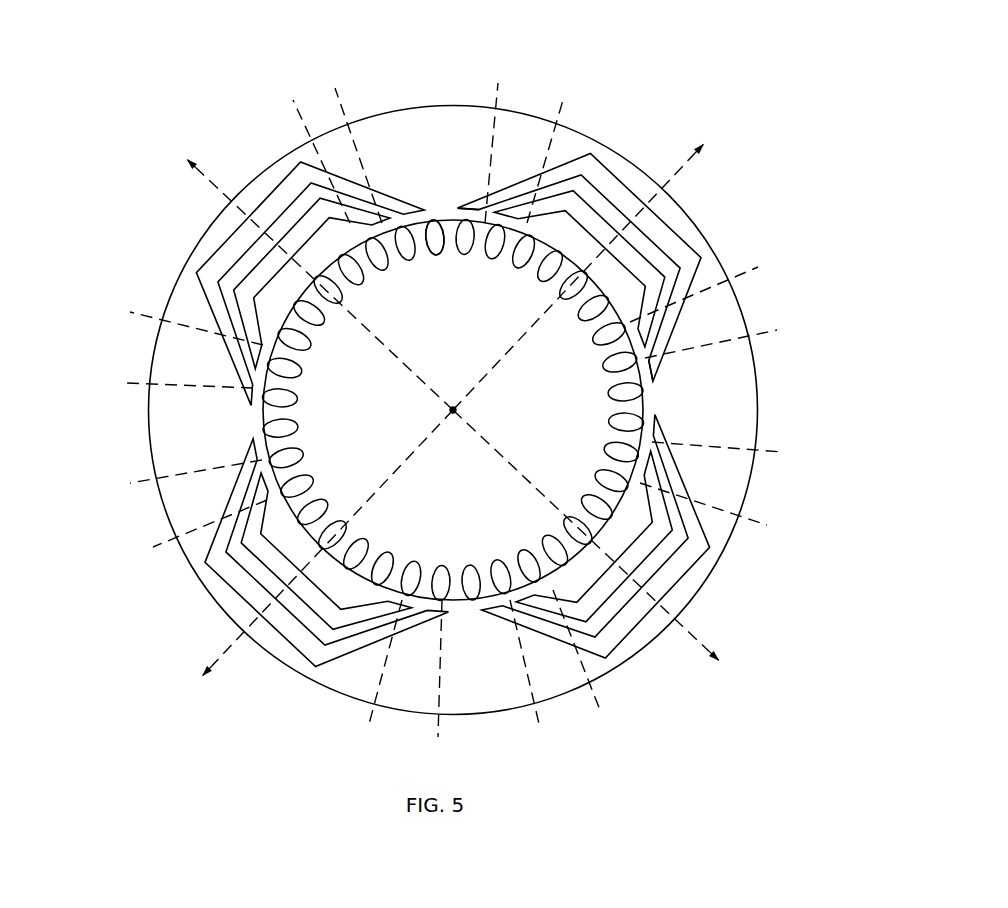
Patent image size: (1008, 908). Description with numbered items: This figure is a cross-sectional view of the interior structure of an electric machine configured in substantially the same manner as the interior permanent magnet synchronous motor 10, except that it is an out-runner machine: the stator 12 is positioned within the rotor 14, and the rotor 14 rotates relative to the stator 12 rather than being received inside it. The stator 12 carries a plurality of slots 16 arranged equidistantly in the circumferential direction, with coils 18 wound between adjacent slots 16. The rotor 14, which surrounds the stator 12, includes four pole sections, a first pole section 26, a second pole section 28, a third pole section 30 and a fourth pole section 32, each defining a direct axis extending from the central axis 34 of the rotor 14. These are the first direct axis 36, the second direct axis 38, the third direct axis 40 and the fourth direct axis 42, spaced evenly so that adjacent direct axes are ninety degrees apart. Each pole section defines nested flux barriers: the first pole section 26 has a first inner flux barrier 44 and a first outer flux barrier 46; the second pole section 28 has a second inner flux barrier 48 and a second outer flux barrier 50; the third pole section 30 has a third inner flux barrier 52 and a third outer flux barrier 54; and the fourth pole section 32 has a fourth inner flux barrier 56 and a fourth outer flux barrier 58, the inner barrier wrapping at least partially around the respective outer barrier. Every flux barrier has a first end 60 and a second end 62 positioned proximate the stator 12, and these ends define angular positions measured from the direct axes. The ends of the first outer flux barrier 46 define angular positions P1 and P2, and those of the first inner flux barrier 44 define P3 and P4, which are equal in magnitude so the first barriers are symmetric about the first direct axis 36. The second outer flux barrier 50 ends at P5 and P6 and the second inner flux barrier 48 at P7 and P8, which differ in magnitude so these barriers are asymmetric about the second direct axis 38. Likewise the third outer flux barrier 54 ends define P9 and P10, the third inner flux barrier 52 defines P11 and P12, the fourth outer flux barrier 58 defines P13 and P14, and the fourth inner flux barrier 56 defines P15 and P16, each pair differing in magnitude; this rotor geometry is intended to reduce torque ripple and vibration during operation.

The interior permanent magnet synchronous motor 10 is at (647, 56).
The stator 12 is at (577, 415).
The rotor 14 is at (461, 113).
The slots 16 is at (466, 258).
The coils 18 is at (449, 248).
The first pole section 26 is at (594, 268).
The second pole section 28 is at (632, 562).
The third pole section 30 is at (300, 582).
The fourth pole section 32 is at (310, 240).
The central axis 34 is at (458, 413).
The first direct axis 36 is at (693, 169).
The second direct axis 38 is at (698, 639).
The third direct axis 40 is at (215, 664).
The fourth direct axis 42 is at (204, 176).
The first inner flux barrier 44 is at (650, 273).
The first outer flux barrier 46 is at (670, 246).
The second inner flux barrier 48 is at (650, 535).
The second outer flux barrier 50 is at (613, 634).
The third inner flux barrier 52 is at (261, 548).
The third outer flux barrier 54 is at (247, 588).
The fourth inner flux barrier 56 is at (313, 214).
The fourth outer flux barrier 58 is at (287, 191).
The first end 60 is at (459, 207).
The second end 62 is at (640, 339).
The angular position P1 is at (552, 146).
The angular position P2 is at (707, 287).
The angular position P3 is at (499, 141).
The angular position P4 is at (721, 338).
The angular position P5 is at (715, 512).
The angular position P6 is at (585, 666).
The angular position P7 is at (728, 455).
The angular position P8 is at (532, 679).
The angular position P9 is at (380, 679).
The angular position P10 is at (193, 531).
The angular position P11 is at (439, 682).
The angular position P12 is at (180, 481).
The angular position P13 is at (181, 318).
The angular position P14 is at (307, 149).
The angular position P15 is at (171, 378).
The angular position P16 is at (348, 140).